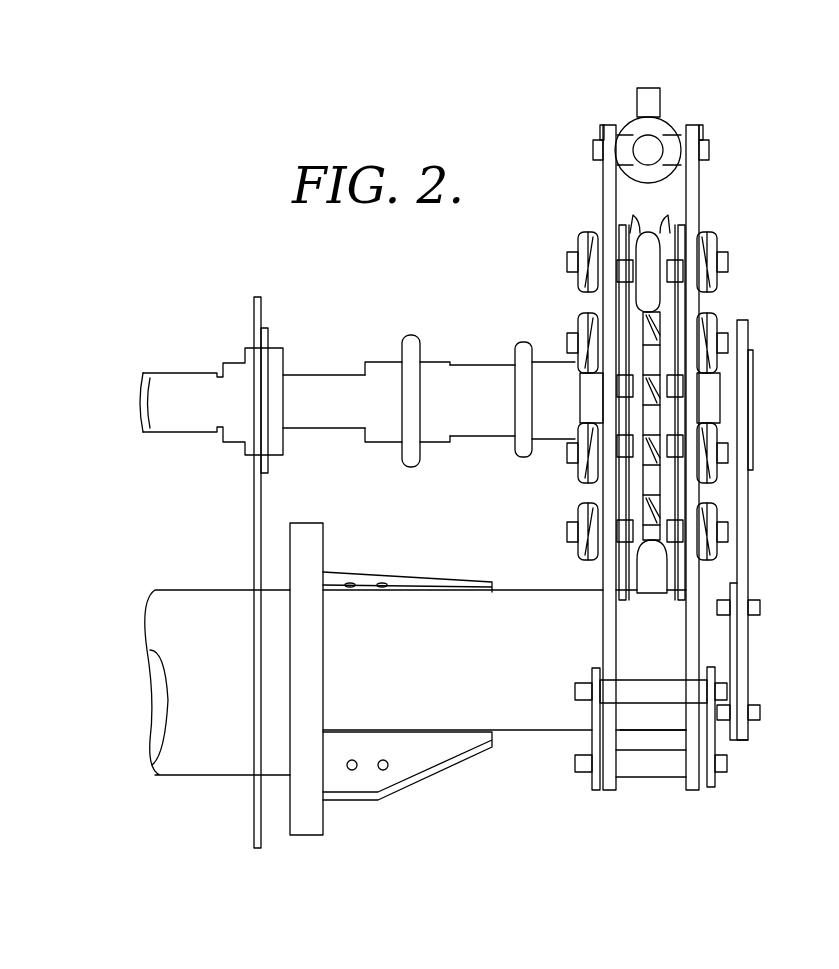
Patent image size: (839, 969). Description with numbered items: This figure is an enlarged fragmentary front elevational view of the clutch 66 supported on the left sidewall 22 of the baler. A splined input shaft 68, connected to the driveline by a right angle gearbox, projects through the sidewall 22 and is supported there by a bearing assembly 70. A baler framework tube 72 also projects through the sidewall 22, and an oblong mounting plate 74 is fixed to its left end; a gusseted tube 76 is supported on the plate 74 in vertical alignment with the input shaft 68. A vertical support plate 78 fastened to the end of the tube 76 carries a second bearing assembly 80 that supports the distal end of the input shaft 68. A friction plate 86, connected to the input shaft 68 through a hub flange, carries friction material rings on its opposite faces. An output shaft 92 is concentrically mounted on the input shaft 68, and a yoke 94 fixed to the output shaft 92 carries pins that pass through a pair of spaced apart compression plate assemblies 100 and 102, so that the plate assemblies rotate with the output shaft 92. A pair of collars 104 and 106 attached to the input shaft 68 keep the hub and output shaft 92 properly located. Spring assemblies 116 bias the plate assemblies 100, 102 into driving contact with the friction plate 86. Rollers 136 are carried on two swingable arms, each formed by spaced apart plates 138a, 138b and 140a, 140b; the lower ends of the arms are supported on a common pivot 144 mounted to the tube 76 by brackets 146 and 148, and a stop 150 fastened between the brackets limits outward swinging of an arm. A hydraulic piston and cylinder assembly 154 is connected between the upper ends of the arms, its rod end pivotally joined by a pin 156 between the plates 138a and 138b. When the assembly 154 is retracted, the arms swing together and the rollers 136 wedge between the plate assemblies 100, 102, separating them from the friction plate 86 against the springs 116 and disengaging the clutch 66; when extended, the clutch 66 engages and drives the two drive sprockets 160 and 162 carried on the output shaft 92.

The left sidewall 22 is at (252, 298).
The clutch 66 is at (744, 253).
The splined input shaft 68 is at (327, 378).
The bearing assembly 70 is at (280, 342).
The baler framework tube 72 is at (210, 775).
The oblong mounting plate 74 is at (320, 830).
The gusseted tube 76 is at (520, 600).
The vertical support plate 78 is at (748, 580).
The bearing assembly 80 is at (750, 365).
The friction plate 86 is at (645, 335).
The output shaft 92 is at (483, 372).
The yoke 94 is at (598, 390).
The compression plate assembly 100 is at (632, 228).
The compression plate assembly 102 is at (672, 228).
The collar 104 is at (385, 432).
The collar 106 is at (703, 405).
The spring assemblies 116 is at (705, 308).
The rollers 136 is at (647, 248).
The plate of arm 138a is at (612, 195).
The plate of arm 138b is at (690, 200).
The plate of arm 140a is at (603, 128).
The plate of arm 140b is at (703, 132).
The common pivot 144 is at (652, 775).
The bracket 146 is at (590, 752).
The bracket 148 is at (715, 783).
The stop 150 is at (640, 688).
The hydraulic piston and cylinder assembly 154 is at (665, 125).
The pin 156 is at (597, 150).
The drive sprocket 160 is at (411, 340).
The drive sprocket 162 is at (525, 456).